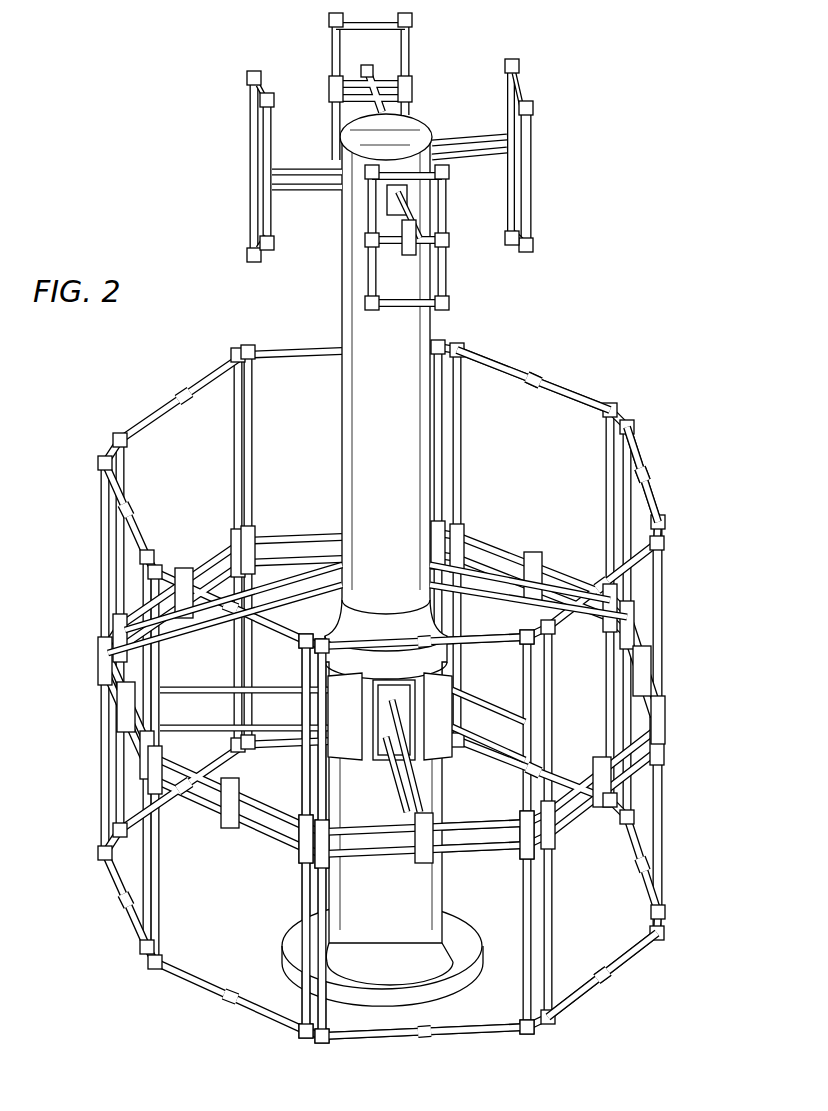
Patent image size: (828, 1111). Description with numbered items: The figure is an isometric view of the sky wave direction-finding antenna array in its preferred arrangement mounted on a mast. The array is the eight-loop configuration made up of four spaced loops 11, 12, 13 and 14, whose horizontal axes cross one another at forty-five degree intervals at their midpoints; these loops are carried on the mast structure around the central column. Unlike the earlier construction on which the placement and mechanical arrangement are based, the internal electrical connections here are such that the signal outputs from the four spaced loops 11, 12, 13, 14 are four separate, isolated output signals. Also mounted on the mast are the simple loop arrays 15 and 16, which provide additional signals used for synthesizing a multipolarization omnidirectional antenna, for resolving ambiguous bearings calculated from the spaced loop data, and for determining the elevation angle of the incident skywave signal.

The spaced loop 11 is at (383, 632).
The spaced loop 12 is at (641, 962).
The spaced loop 13 is at (655, 464).
The spaced loop 14 is at (570, 385).
The simple loop array 15 is at (450, 264).
The simple loop array 16 is at (537, 201).